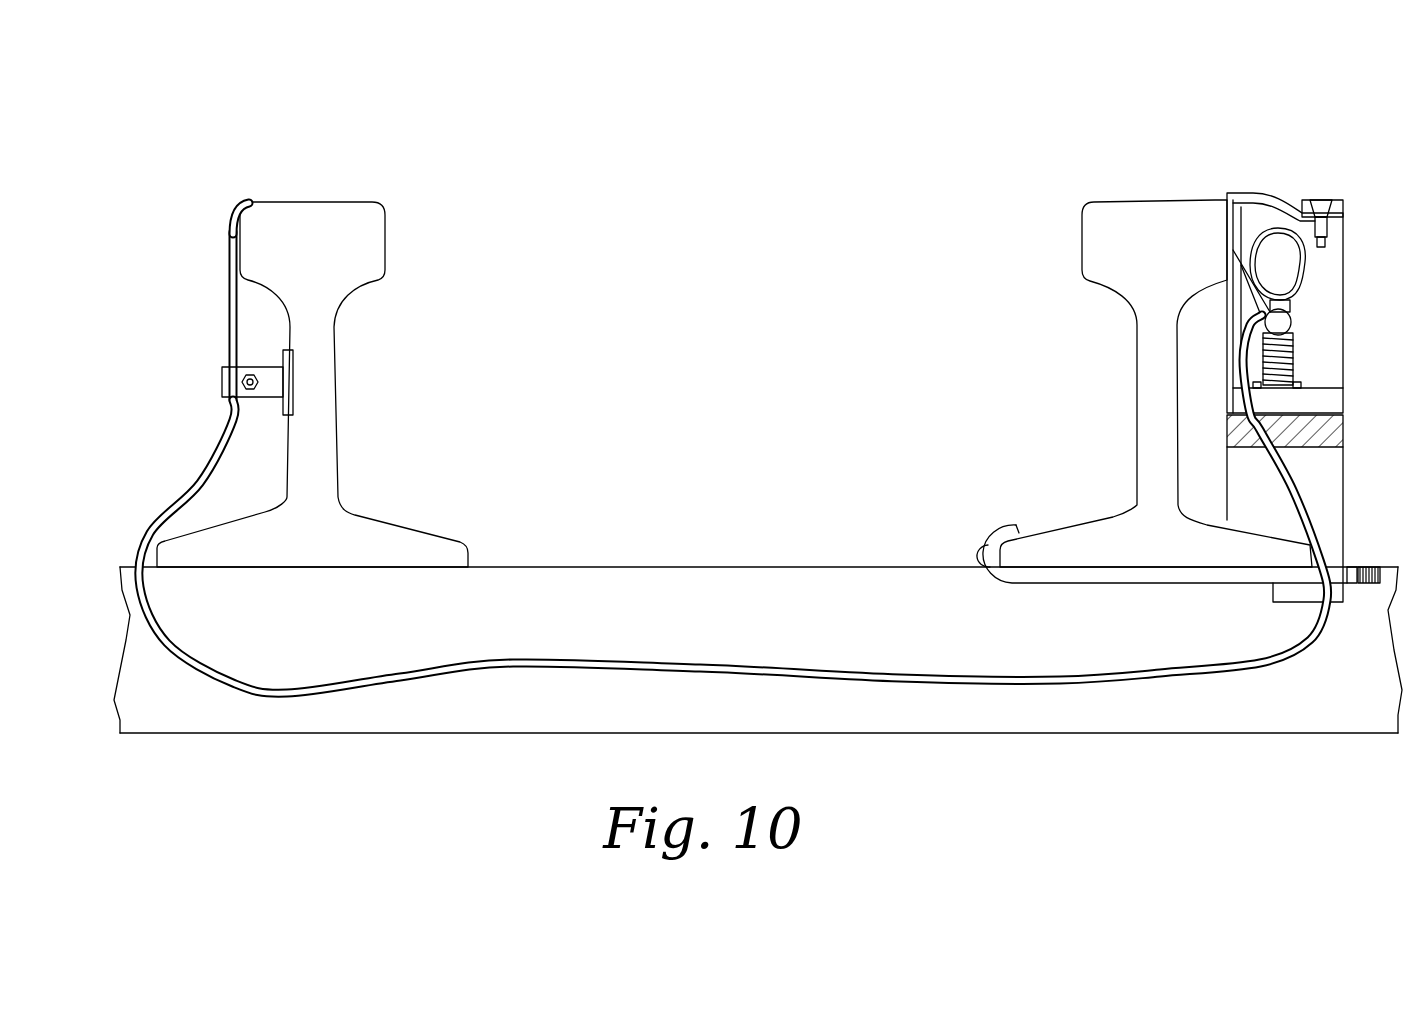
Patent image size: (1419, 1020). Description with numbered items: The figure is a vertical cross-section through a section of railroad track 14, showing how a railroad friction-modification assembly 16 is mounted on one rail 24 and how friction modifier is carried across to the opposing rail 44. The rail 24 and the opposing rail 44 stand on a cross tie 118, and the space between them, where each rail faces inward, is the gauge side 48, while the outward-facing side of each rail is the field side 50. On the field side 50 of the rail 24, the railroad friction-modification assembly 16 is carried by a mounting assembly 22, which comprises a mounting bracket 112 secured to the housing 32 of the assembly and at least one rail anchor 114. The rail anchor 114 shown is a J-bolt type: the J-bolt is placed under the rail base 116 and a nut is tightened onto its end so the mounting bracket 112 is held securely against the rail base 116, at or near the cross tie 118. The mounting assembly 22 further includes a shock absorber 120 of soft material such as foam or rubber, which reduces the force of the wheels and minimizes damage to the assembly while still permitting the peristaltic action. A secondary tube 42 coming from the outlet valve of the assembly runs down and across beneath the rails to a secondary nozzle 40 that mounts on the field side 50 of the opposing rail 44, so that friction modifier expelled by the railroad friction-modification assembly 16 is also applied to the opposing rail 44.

The section of railroad track 14 is at (907, 176).
The railroad friction-modification assembly 16 is at (1318, 146).
The mounting assembly 22 is at (222, 380).
The rail 24 is at (1135, 215).
The housing 32 is at (1328, 255).
The secondary nozzle 40 is at (247, 202).
The secondary tube 42 is at (197, 480).
The opposing rail 44 is at (340, 217).
The gauge side 48 is at (625, 233).
The field side 50 is at (186, 243).
The mounting bracket 112 is at (1262, 507).
The rail anchor 114 is at (980, 550).
The rail base 116 is at (407, 553).
The cross tie 118 is at (890, 733).
The shock absorber 120 is at (1350, 427).